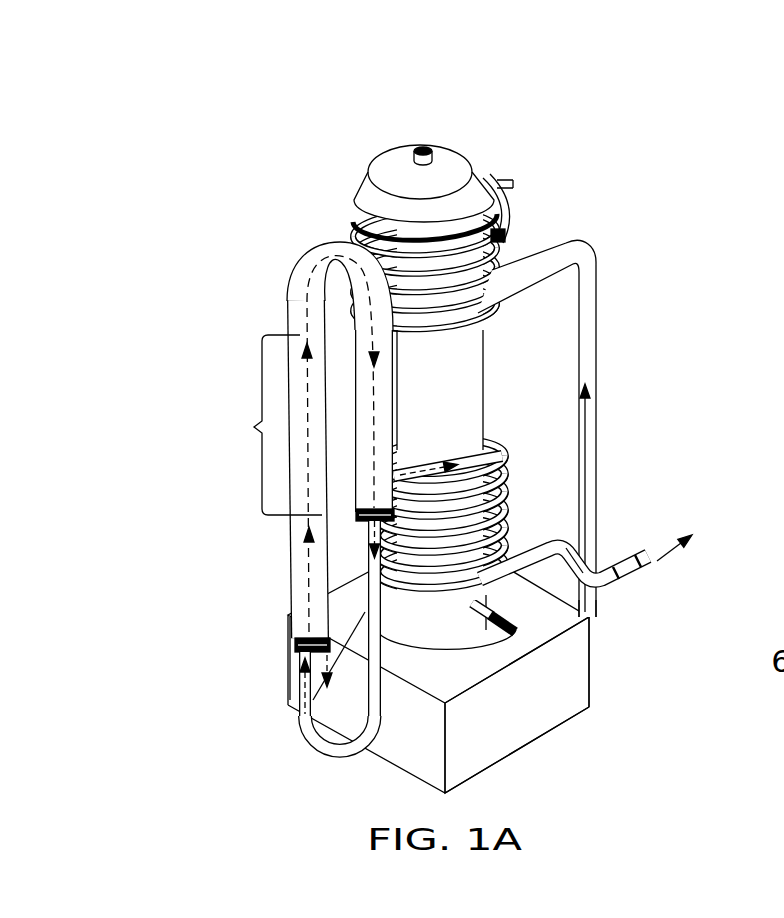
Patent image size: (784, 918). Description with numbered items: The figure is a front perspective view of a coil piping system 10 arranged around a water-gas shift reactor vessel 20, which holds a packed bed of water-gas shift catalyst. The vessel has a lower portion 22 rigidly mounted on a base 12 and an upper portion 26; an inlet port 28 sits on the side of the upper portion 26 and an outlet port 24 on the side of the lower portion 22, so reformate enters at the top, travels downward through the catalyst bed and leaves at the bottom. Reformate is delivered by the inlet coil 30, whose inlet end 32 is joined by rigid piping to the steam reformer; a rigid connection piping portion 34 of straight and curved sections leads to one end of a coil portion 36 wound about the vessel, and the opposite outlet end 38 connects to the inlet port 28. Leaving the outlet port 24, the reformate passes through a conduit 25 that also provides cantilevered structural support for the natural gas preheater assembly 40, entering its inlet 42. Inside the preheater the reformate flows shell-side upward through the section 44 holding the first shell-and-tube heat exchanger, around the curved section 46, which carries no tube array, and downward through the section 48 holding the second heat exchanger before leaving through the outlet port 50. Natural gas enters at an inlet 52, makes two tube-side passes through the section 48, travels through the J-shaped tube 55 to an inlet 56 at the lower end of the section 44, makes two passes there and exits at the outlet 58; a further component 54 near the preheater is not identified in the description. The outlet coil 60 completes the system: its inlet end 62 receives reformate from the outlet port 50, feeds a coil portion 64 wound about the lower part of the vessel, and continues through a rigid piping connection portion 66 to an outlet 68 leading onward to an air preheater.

The coil piping system 10 is at (290, 116).
The base 12 is at (483, 737).
The water-gas shift reactor vessel 20 is at (456, 401).
The lower portion 22 is at (593, 708).
The outlet port 24 is at (398, 615).
The conduit 25 is at (327, 732).
The upper portion 26 is at (397, 188).
The inlet port 28 is at (490, 173).
The inlet coil 30 is at (598, 178).
The inlet end 32 is at (593, 617).
The rigid connection piping portion 34 is at (596, 306).
The coil portion 36 is at (503, 257).
The outlet end 38 is at (513, 190).
The natural gas preheater assembly 40 is at (244, 268).
The inlet 42 is at (367, 560).
The section 44 is at (288, 292).
The curved section 46 is at (333, 246).
The section 48 is at (261, 425).
The outlet port 50 is at (404, 550).
The inlet 52 is at (500, 430).
The upper coupling 54 is at (368, 542).
The tube 55 is at (337, 748).
The inlet 56 is at (290, 667).
The outlet 58 is at (297, 707).
The outlet coil 60 is at (510, 497).
The inlet end 62 is at (545, 478).
The coil portion 64 is at (517, 521).
The rigid piping connection portion 66 is at (600, 553).
The outlet 68 is at (657, 561).